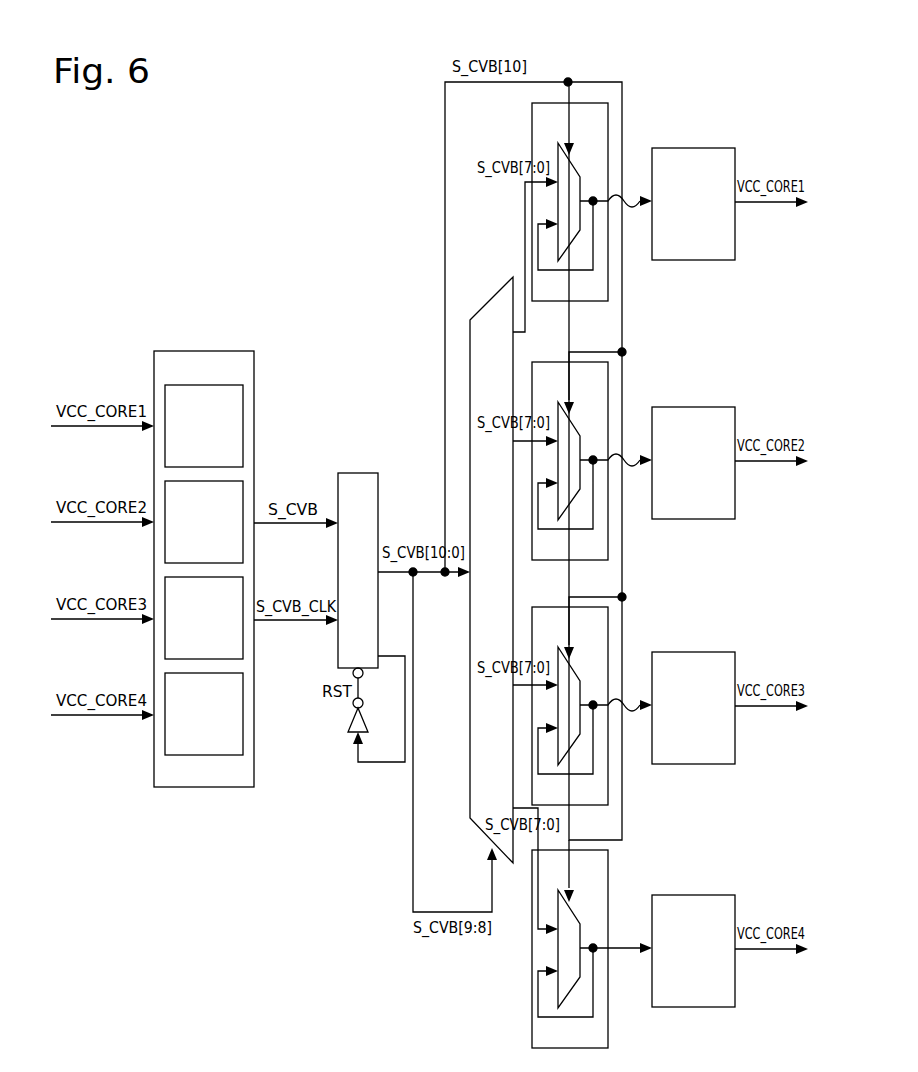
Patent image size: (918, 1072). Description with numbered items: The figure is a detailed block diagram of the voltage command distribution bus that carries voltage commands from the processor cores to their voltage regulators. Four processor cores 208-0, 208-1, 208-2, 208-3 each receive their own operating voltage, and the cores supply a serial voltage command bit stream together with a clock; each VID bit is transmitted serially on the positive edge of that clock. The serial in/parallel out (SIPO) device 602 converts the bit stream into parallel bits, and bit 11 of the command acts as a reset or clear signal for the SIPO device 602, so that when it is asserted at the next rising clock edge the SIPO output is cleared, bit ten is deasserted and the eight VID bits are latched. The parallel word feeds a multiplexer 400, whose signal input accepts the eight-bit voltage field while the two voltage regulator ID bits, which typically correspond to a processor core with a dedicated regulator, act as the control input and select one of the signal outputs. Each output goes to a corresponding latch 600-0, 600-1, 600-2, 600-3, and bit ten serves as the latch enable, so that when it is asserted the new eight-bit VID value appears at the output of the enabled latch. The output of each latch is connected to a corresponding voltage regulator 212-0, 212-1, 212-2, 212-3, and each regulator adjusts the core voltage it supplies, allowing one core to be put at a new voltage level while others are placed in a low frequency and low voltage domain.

The processor core 208-0 is at (178, 450).
The processor core 208-1 is at (178, 546).
The processor core 208-2 is at (178, 642).
The processor core 208-3 is at (178, 738).
The serial in/parallel out (SIPO) device 602 is at (358, 472).
The bit 11 is at (379, 700).
The multiplexer (MUX) 400 is at (503, 582).
The latch 600-0 is at (558, 203).
The latch 600-1 is at (558, 462).
The latch 600-2 is at (558, 707).
The latch 600-3 is at (558, 950).
The voltage regulator 212-0 is at (672, 237).
The voltage regulator 212-1 is at (672, 496).
The voltage regulator 212-2 is at (672, 741).
The voltage regulator 212-3 is at (672, 984).